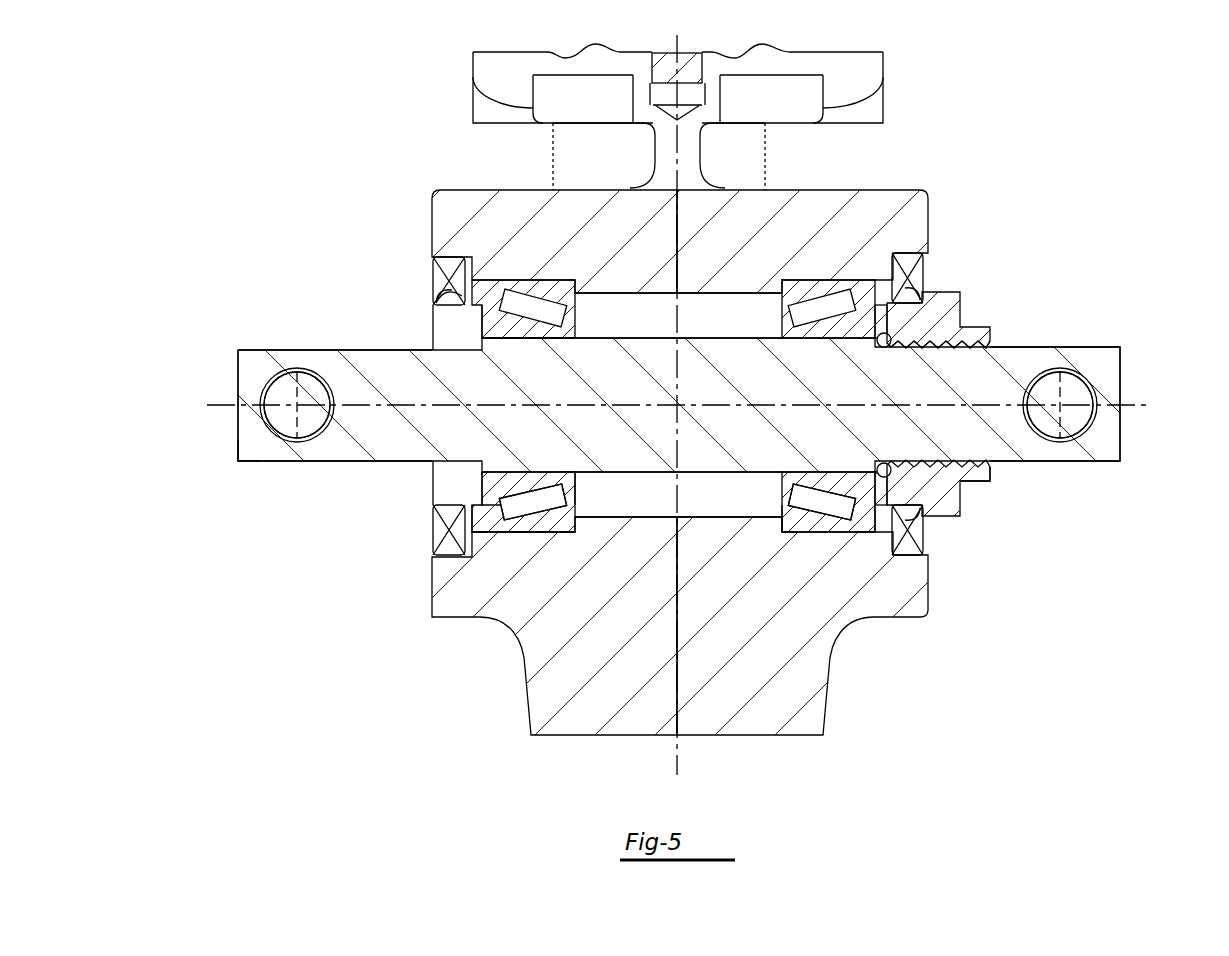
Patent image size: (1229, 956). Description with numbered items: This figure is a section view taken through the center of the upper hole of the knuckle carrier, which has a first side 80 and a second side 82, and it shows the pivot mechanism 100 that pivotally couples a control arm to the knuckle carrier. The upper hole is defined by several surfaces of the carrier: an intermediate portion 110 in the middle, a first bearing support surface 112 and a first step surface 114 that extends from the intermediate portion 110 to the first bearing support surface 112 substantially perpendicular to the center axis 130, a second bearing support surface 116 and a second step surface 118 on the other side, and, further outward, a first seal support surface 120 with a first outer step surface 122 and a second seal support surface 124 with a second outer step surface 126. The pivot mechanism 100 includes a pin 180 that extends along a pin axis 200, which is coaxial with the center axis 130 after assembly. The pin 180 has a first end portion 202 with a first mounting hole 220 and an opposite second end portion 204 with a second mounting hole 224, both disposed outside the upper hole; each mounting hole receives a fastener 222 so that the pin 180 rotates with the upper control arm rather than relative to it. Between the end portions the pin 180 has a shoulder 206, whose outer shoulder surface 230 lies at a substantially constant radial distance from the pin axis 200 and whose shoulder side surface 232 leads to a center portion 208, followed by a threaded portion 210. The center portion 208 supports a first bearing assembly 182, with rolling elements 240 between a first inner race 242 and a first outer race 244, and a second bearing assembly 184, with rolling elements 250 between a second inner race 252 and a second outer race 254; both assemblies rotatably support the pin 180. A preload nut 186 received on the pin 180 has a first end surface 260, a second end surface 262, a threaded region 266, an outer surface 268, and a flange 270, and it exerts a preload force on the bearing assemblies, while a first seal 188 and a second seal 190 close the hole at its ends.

The first side 80 is at (425, 583).
The second side 82 is at (940, 587).
The pivot mechanism 100 is at (1082, 335).
The intermediate portion 110 is at (668, 296).
The first bearing support surface 112 is at (515, 532).
The first step surface 114 is at (575, 532).
The second bearing support surface 116 is at (832, 522).
The second step surface 118 is at (785, 530).
The first seal support surface 120 is at (432, 262).
The first outer step surface 122 is at (468, 558).
The second seal support surface 124 is at (922, 258).
The second outer step surface 126 is at (905, 548).
The center axis 130 is at (280, 405).
The pin 180 is at (636, 392).
The first bearing assembly 182 is at (521, 272).
The second bearing assembly 184 is at (834, 272).
The preload nut 186 is at (953, 293).
The first seal 188 is at (433, 278).
The second seal 190 is at (922, 278).
The pin axis 200 is at (218, 403).
The first end portion 202 is at (240, 462).
The second end portion 204 is at (1118, 458).
The shoulder 206 is at (433, 486).
The center portion 208 is at (795, 332).
The threaded portion 210 is at (905, 345).
The first mounting hole 220 is at (313, 380).
The fastener 222 is at (278, 418).
The second mounting hole 224 is at (1047, 380).
The outer shoulder surface 230 is at (433, 293).
The shoulder side surface 232 is at (503, 325).
The rolling elements 240 is at (544, 495).
The first inner race 242 is at (498, 472).
The first outer race 244 is at (540, 520).
The rolling elements 250 is at (813, 495).
The second inner race 252 is at (862, 474).
The second outer race 254 is at (812, 518).
The first end surface 260 is at (875, 325).
The second end surface 262 is at (990, 477).
The threaded region 266 is at (918, 462).
The outer surface 268 is at (905, 520).
The flange 270 is at (960, 520).